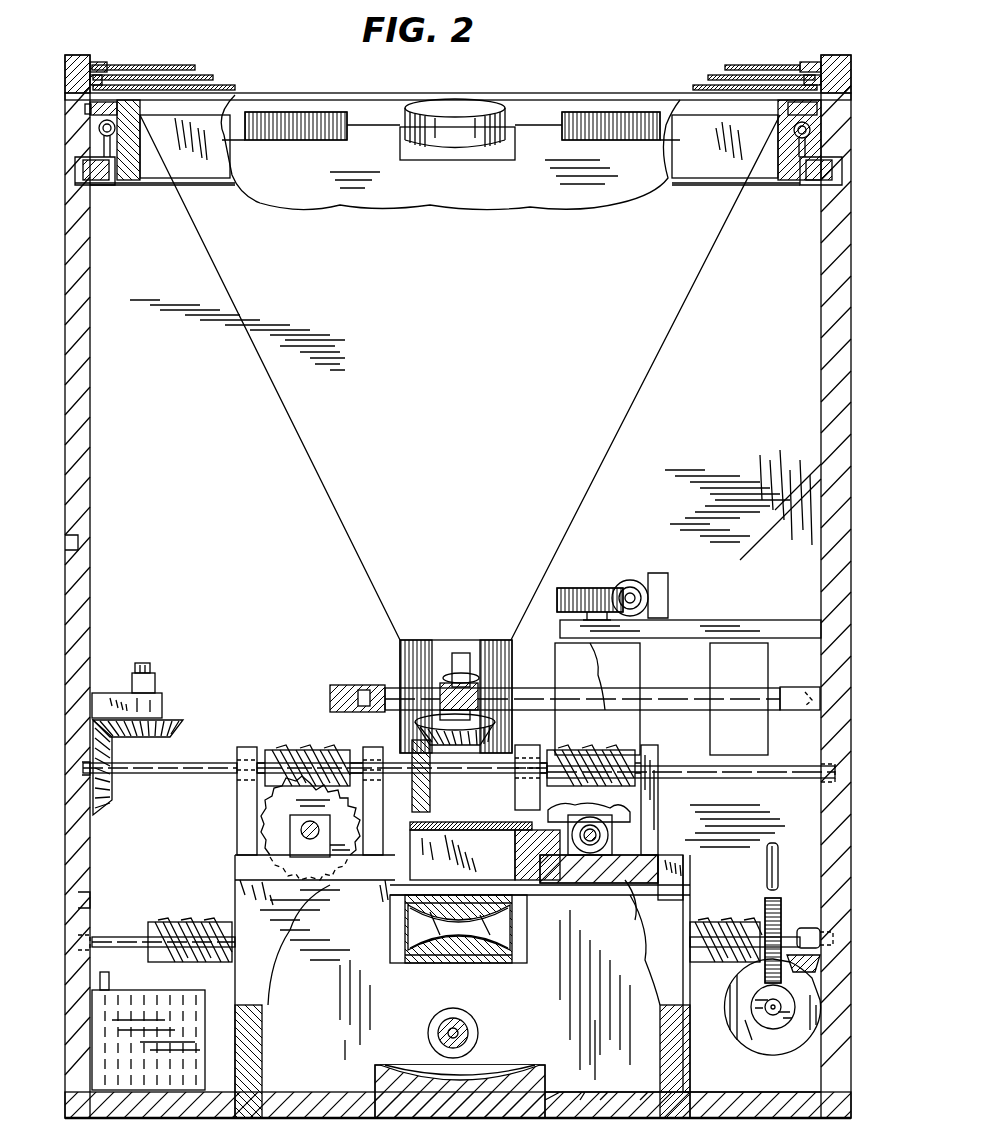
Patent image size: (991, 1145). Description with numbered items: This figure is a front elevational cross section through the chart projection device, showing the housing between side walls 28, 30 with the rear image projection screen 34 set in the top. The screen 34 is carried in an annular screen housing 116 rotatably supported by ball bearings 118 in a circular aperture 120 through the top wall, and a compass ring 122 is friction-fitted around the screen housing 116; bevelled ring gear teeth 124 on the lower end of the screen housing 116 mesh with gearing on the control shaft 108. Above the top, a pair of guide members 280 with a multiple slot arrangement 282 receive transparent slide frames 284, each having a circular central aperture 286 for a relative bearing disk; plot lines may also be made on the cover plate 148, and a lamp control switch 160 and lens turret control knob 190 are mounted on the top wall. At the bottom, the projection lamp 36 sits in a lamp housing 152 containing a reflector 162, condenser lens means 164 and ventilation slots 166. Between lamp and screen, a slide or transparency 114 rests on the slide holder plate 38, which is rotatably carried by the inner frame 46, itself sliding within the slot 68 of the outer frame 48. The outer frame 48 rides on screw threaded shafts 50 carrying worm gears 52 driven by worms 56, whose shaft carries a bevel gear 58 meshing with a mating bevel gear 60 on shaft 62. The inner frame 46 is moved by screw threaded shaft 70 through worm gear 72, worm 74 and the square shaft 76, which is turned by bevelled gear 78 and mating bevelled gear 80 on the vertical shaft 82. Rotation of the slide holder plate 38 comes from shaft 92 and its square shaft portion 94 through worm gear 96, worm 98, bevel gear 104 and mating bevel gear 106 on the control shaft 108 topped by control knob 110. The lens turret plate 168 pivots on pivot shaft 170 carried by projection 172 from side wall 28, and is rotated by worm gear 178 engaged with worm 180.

The side wall 28 is at (851, 618).
The side wall 30 is at (68, 438).
The rear image projection screen 34 is at (652, 93).
The projection lamp 36 is at (470, 1038).
The slide holder plate 38 is at (540, 824).
The inner frame 46 is at (630, 860).
The outer frame 48 is at (683, 870).
The screw threaded shaft 50 is at (180, 924).
The worm gear 52 is at (781, 912).
The worm 56 is at (760, 996).
The bevel gear 58 is at (745, 1040).
The mating bevel gear 60 is at (812, 962).
The shaft 62 is at (778, 862).
The slot 68 is at (640, 882).
The screw threaded shaft 70 is at (262, 822).
The worm gear 72 is at (285, 832).
The worm 74 is at (292, 750).
The square shaft 76 is at (220, 766).
The bevelled gear 78 is at (104, 800).
The mating bevelled gear 80 is at (175, 724).
The vertical shaft 82 is at (152, 668).
The shaft 92 is at (684, 778).
The square shaft portion 94 is at (478, 780).
The worm gear 96 is at (606, 825).
The worm 98 is at (612, 752).
The bevel gear 104 is at (430, 790).
The mating bevel gear 106 is at (415, 723).
The control shaft 108 is at (466, 660).
The control knob 110 is at (455, 112).
The slide or transparency 114 is at (440, 822).
The screen housing 116 is at (780, 175).
The ball bearings 118 is at (95, 155).
The circular aperture 120 is at (98, 125).
The compass ring 122 is at (90, 108).
The bevelled ring gear teeth 124 is at (836, 170).
The cover plate 148 is at (232, 96).
The lamp housing 152 is at (584, 1008).
The lamp control switch 160 is at (318, 140).
The reflector 162 is at (526, 1068).
The condenser lens means 164 is at (512, 935).
The ventilation slots 166 is at (594, 1092).
The turret plate 168 is at (540, 676).
The pivot shaft 170 is at (568, 625).
The projection 172 is at (680, 620).
The worm gear 178 is at (598, 605).
The worm 180 is at (390, 685).
The lens turret control knob 190 is at (632, 140).
The guide member 280 is at (74, 60).
The multiple slot arrangement 282 is at (72, 75).
The slide frame 284 is at (810, 62).
The circular central aperture 286 is at (802, 66).